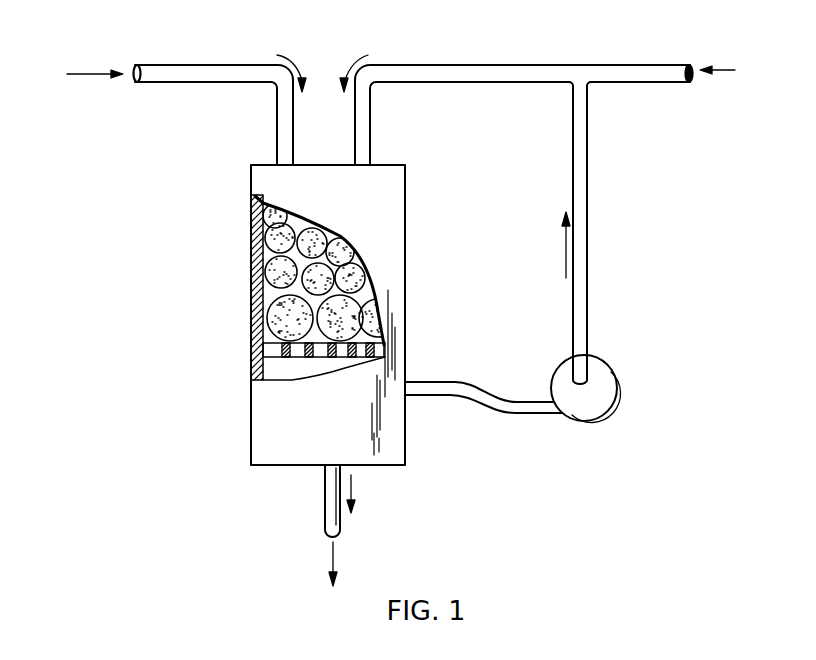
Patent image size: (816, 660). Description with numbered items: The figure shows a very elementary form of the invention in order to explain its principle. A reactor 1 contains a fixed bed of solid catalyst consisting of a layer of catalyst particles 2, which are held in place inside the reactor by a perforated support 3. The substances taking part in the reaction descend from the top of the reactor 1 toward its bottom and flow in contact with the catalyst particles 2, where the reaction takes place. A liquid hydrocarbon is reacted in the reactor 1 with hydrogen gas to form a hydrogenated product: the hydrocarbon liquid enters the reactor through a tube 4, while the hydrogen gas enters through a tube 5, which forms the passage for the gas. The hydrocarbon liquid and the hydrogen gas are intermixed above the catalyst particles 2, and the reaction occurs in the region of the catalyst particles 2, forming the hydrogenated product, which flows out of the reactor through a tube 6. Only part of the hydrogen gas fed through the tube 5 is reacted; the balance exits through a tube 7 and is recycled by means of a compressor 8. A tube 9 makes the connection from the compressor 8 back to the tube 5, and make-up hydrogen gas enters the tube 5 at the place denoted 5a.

The reactor 1 is at (258, 173).
The catalyst particles 2 is at (305, 241).
The perforated support 3 is at (282, 357).
The tube 4 is at (221, 77).
The tube 5 is at (466, 76).
The make-up hydrogen entry place 5a is at (655, 72).
The tube 6 is at (330, 490).
The tube 7 is at (473, 390).
The compressor 8 is at (603, 402).
The tube 9 is at (582, 286).